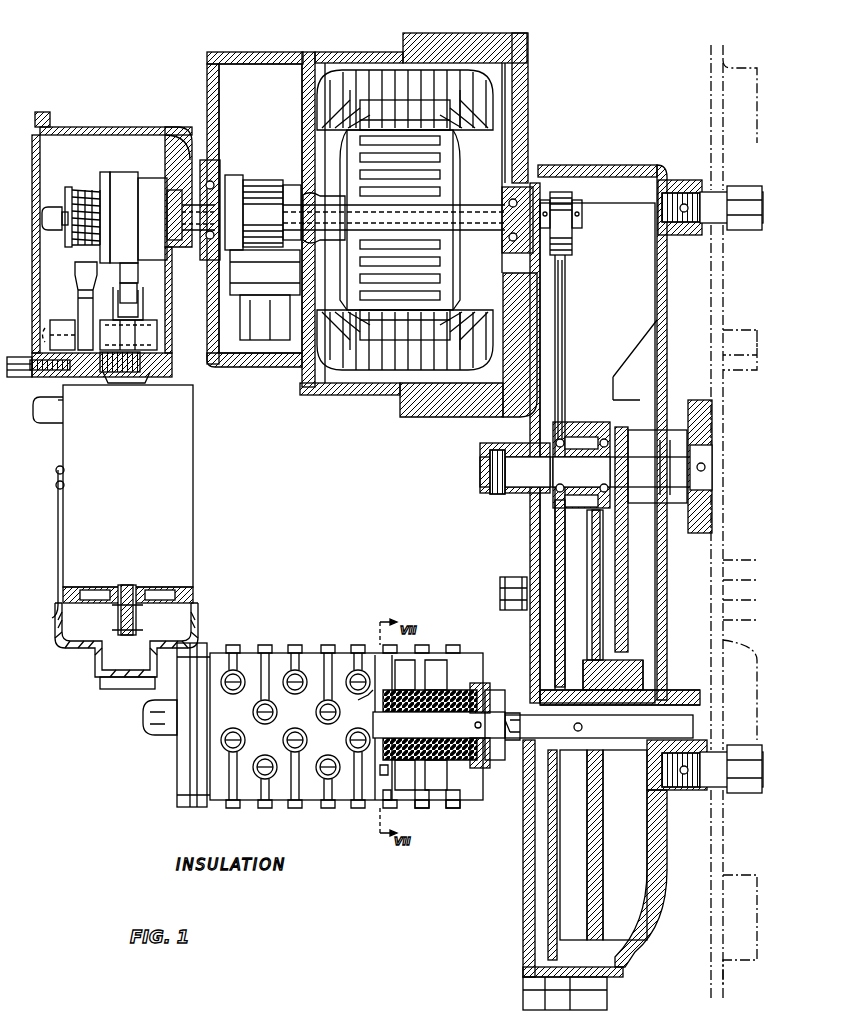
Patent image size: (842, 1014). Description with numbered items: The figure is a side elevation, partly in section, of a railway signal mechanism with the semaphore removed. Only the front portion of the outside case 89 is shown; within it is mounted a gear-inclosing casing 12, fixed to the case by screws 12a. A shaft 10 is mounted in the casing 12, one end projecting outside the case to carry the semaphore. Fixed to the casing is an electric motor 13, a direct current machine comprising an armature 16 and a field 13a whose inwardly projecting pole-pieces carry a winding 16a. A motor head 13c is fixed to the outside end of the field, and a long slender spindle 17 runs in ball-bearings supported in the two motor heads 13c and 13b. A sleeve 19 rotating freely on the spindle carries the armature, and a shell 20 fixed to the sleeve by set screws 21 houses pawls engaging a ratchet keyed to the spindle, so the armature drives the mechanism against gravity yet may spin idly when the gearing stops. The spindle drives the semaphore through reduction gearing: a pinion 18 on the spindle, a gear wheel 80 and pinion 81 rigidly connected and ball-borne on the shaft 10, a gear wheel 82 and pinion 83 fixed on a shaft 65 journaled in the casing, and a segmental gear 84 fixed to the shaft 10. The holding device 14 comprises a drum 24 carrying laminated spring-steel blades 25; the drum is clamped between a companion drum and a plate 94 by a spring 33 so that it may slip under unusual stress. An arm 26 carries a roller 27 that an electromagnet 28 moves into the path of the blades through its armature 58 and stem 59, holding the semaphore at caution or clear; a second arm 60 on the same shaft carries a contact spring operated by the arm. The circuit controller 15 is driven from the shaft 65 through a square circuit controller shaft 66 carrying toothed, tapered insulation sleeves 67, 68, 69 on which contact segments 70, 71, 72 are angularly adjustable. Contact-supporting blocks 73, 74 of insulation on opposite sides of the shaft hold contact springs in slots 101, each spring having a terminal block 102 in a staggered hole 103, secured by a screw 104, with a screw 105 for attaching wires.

The shaft 10 is at (670, 466).
The gear-inclosing casing 12 is at (615, 172).
The screws 12a is at (700, 200).
The electric motor 13 is at (418, 223).
The field 13a is at (405, 95).
The motor head 13b is at (526, 122).
The motor head 13c is at (243, 370).
The holding device 14 is at (99, 247).
The circuit controller 15 is at (346, 710).
The armature 16 is at (392, 220).
The winding 16a is at (418, 95).
The spindle 17 is at (332, 222).
The pinion 18 is at (575, 202).
The sleeve 19 is at (340, 240).
The shell 20 is at (154, 178).
The set screws 21 is at (166, 256).
The drum 24 is at (124, 175).
The blades 25 is at (130, 293).
The arm 26 is at (108, 330).
The roller 27 is at (135, 307).
The electromagnet 28 is at (113, 501).
The spring 33 is at (82, 188).
The armature 58 is at (66, 652).
The stem 59 is at (128, 592).
The second arm 60 is at (78, 318).
The shaft 65 is at (599, 726).
The circuit controller shaft 66 is at (439, 725).
The insulation sleeve 67 is at (478, 683).
The insulation sleeve 68 is at (432, 690).
The insulation sleeve 69 is at (384, 795).
The contact segment 70 is at (460, 800).
The contact segment 71 is at (428, 800).
The contact segment 72 is at (390, 770).
The contact-supporting block 73 is at (437, 650).
The contact-supporting block 74 is at (222, 770).
The gear wheel 80 is at (566, 270).
The pinion 81 is at (600, 422).
The gear wheel 82 is at (590, 545).
The pinion 83 is at (645, 672).
The segmental gear 84 is at (630, 593).
The outside case 89 is at (710, 100).
The plate 94 is at (100, 180).
The slot 101 is at (315, 655).
The terminal block 102 is at (383, 652).
The hole 103 is at (355, 645).
The screw 104 is at (375, 650).
The screw 105 is at (372, 700).